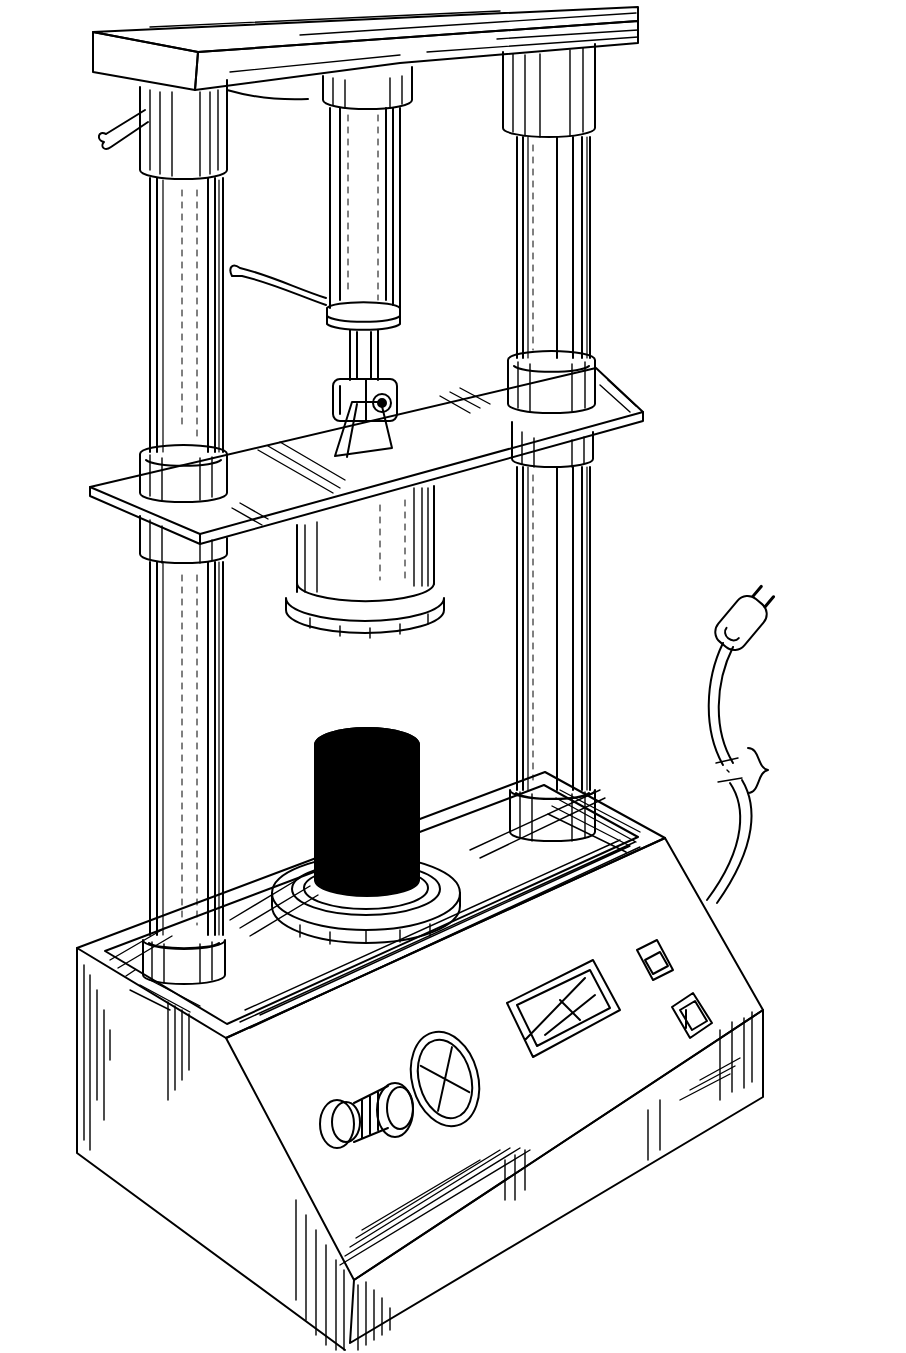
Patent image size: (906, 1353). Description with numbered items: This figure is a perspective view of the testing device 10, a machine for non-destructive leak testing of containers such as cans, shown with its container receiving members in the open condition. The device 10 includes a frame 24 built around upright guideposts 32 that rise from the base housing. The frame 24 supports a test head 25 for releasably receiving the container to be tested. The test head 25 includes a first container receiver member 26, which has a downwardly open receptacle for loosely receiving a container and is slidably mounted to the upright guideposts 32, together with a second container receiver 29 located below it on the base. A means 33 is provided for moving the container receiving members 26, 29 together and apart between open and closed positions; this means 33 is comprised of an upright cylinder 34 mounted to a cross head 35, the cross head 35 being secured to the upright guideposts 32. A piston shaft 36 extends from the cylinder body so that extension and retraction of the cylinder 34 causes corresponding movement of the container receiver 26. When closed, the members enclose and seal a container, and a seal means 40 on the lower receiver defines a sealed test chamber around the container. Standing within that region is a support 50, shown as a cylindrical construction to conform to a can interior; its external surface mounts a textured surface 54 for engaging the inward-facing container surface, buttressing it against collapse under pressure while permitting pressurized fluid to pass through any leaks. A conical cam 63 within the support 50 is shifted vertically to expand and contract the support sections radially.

The testing device 10 is at (616, 224).
The frame 24 is at (395, 514).
The test head 25 is at (477, 522).
The first container receiver member 26 is at (643, 410).
The second container receiver 29 is at (418, 809).
The upright guideposts 32 is at (560, 682).
The means for moving the container receiving members 33 is at (408, 198).
The upright cylinder 34 is at (363, 203).
The cross head 35 is at (463, 38).
The piston shaft 36 is at (368, 353).
The seal means 40 is at (420, 885).
The support 50 is at (368, 782).
The textured surface 54 is at (316, 763).
The conical cam 63 is at (367, 728).